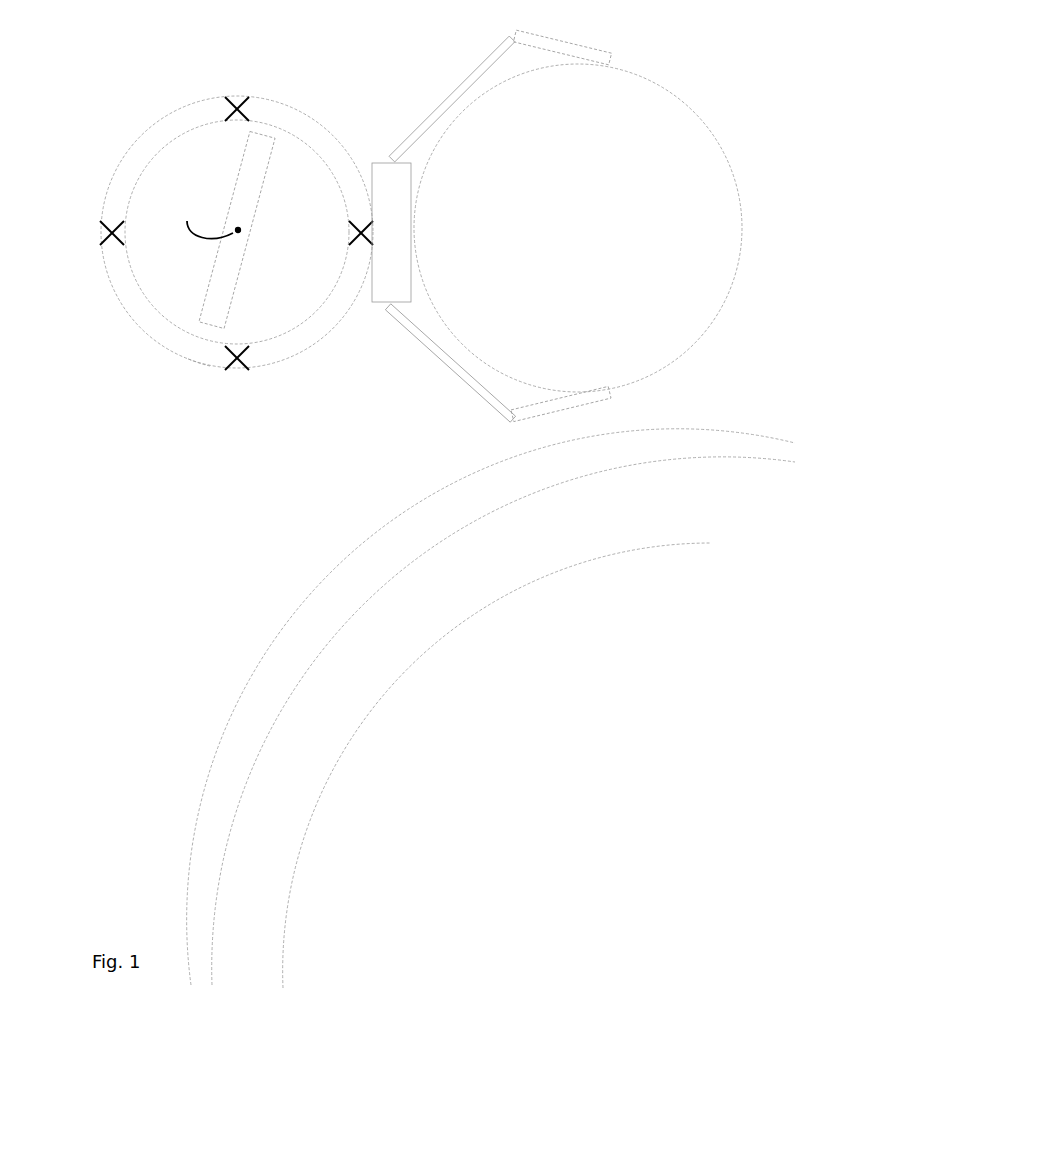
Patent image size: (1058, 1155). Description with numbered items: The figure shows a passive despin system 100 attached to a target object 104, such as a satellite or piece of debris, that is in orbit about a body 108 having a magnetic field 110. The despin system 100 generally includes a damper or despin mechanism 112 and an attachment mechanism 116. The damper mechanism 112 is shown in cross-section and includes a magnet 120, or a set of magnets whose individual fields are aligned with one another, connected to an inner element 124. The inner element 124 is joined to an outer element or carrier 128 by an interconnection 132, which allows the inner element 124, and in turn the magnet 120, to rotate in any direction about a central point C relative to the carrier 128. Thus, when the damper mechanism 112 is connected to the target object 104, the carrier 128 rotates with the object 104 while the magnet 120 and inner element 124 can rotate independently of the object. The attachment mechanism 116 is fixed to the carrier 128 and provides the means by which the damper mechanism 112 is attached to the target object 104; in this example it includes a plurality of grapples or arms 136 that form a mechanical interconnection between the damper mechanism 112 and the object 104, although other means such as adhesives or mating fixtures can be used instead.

The passive despin system 100 is at (259, 49).
The target object 104 is at (674, 92).
The body 108 is at (401, 682).
The magnetic field 110 is at (246, 691).
The damper mechanism 112 is at (126, 119).
The attachment mechanism 116 is at (360, 119).
The magnet 120 is at (203, 291).
The inner element 124 is at (248, 347).
The carrier 128 is at (196, 364).
The interconnection 132 is at (103, 232).
The arms 136 is at (489, 63).